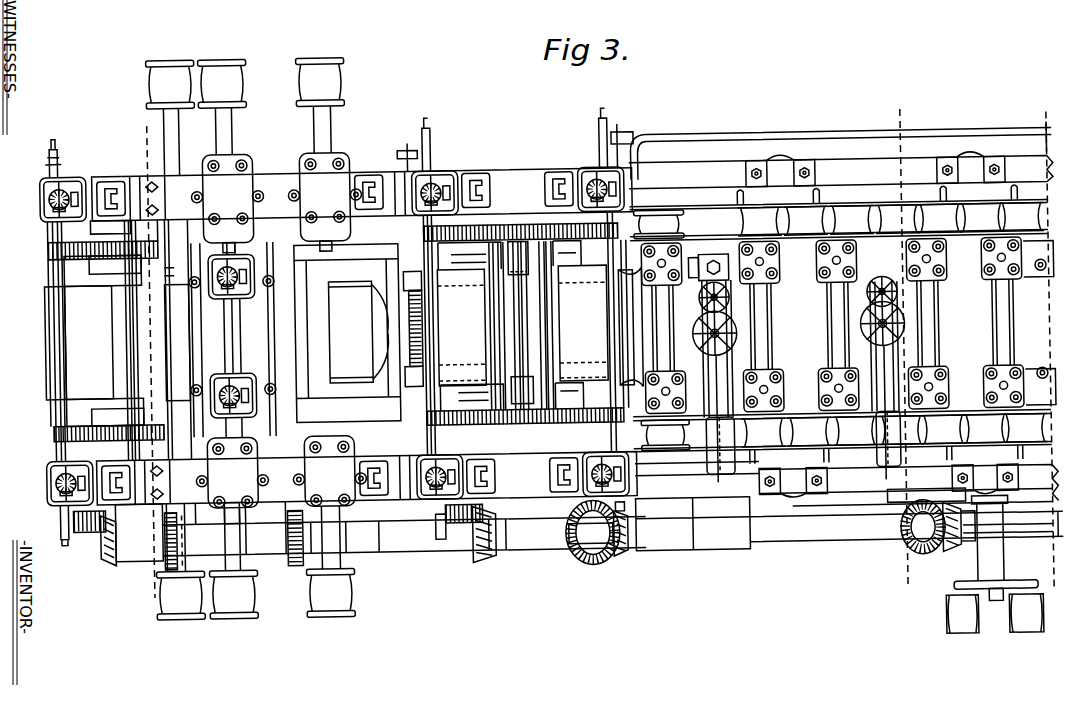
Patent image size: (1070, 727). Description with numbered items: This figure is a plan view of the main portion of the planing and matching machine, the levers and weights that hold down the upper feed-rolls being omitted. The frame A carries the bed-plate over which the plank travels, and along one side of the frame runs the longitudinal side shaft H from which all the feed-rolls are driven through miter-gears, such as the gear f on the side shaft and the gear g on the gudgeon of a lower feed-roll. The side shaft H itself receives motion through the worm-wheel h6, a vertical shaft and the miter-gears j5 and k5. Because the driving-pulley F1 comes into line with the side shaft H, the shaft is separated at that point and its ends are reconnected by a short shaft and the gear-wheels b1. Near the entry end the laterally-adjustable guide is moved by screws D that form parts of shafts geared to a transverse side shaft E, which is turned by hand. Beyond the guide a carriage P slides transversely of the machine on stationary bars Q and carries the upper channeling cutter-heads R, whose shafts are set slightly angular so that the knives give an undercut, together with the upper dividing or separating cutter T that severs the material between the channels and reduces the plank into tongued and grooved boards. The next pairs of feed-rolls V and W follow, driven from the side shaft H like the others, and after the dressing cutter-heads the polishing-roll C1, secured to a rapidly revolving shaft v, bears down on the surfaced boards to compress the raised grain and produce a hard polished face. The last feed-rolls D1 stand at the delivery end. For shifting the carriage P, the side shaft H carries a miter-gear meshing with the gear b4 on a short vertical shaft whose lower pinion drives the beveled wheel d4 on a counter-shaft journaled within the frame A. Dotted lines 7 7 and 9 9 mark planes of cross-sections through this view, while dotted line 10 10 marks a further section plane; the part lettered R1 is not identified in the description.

The frame A is at (700, 162).
The side shaft E is at (992, 131).
The stationary bars Q is at (963, 196).
The carriage P is at (955, 348).
The upper channeling cutter-heads R is at (1015, 300).
The screws D is at (626, 312).
The upper dividing or separating cutter T is at (634, 327).
The feed-roll W is at (461, 327).
The feed-roll V is at (583, 323).
The roller R1 is at (350, 332).
The last feed-rolls D1 is at (79, 343).
The polishing-roll C1 is at (177, 342).
The shaft v is at (178, 266).
The dotted line 7 7 is at (153, 365).
The dotted line 9 9 is at (906, 342).
The dotted line 10 10 is at (1053, 338).
The miter-gear g is at (78, 535).
The miter-gear f is at (100, 568).
The gear-wheels b1 is at (294, 583).
The driving-pulley F1 is at (251, 553).
The miter-gear j5 is at (580, 572).
The worm-wheel h6 is at (598, 556).
The miter-gear k5 is at (623, 563).
The shaft H is at (768, 548).
The miter-gear b4 is at (905, 545).
The beveled wheel d4 is at (955, 576).